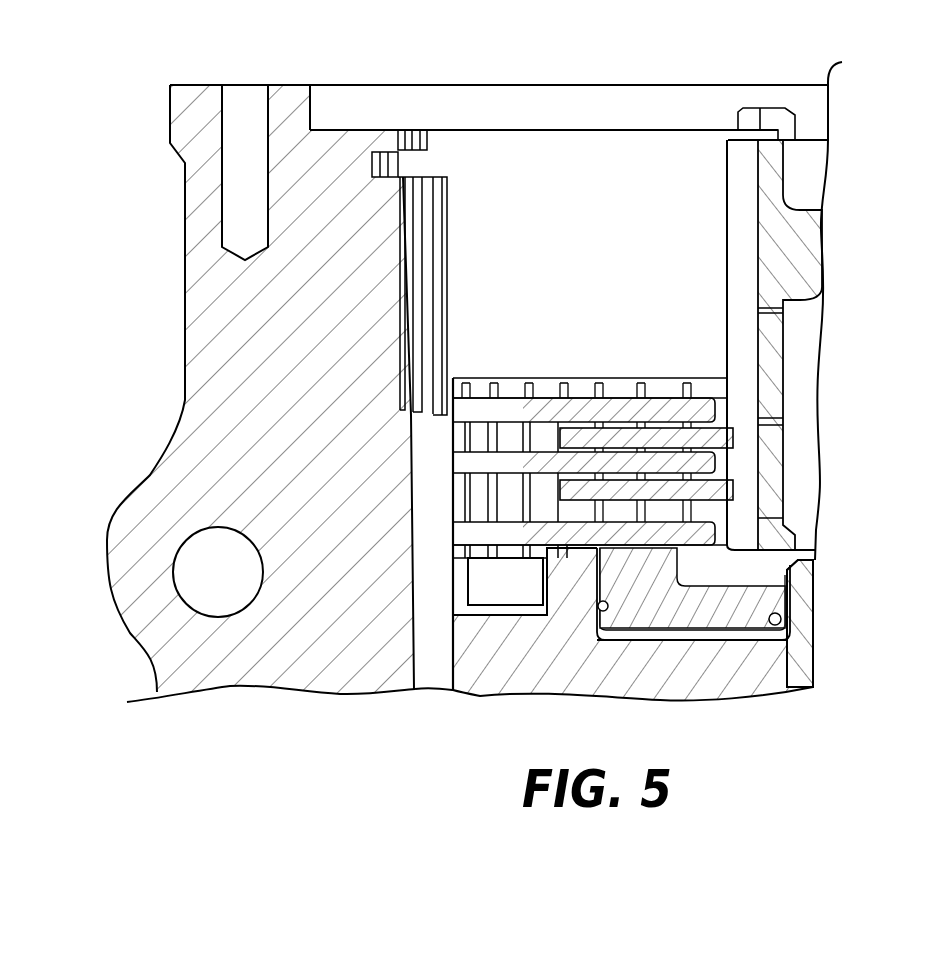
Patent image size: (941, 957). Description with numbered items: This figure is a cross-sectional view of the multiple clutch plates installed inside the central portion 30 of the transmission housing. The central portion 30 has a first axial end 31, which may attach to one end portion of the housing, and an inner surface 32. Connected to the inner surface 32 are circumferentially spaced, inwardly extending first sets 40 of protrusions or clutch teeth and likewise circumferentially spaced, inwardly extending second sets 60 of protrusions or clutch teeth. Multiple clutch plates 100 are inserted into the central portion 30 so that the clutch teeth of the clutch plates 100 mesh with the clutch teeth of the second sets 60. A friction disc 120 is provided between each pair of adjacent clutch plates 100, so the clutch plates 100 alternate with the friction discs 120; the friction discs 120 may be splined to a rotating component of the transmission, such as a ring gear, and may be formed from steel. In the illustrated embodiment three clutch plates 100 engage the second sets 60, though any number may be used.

The central portion 30 is at (289, 83).
The first axial end 31 is at (188, 82).
The inner surface 32 is at (634, 155).
The first sets of protrusions or clutch teeth 40 is at (421, 176).
The second sets of protrusions or clutch teeth 60 is at (681, 486).
The clutch plates 100 is at (557, 410).
The friction disc 120 is at (730, 492).